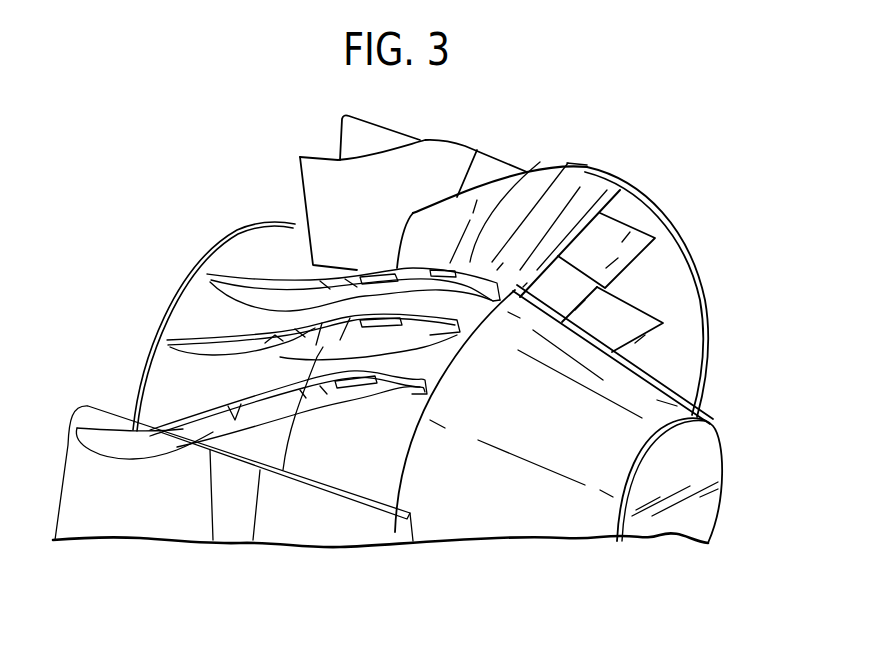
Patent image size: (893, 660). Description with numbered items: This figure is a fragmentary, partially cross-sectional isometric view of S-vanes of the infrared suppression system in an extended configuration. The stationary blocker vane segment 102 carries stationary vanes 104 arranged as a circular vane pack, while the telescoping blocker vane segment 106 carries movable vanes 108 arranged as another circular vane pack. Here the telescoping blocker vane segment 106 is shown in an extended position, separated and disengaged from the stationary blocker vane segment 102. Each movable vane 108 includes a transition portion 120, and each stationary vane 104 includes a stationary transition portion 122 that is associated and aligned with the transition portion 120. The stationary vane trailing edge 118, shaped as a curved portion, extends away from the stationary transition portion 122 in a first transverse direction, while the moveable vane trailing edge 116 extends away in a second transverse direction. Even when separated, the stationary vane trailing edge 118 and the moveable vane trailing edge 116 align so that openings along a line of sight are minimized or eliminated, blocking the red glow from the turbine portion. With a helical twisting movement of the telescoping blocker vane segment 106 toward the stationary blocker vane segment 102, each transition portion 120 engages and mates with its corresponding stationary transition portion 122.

The stationary blocker vane segment 102 is at (262, 190).
The stationary vanes 104 is at (240, 279).
The telescoping blocker vane segment 106 is at (742, 311).
The movable vanes 108 is at (487, 273).
The moveable vane trailing edge 116 is at (497, 297).
The stationary vane trailing edge 118 is at (168, 346).
The transition portion 120 is at (317, 387).
The stationary transition portion 122 is at (250, 411).